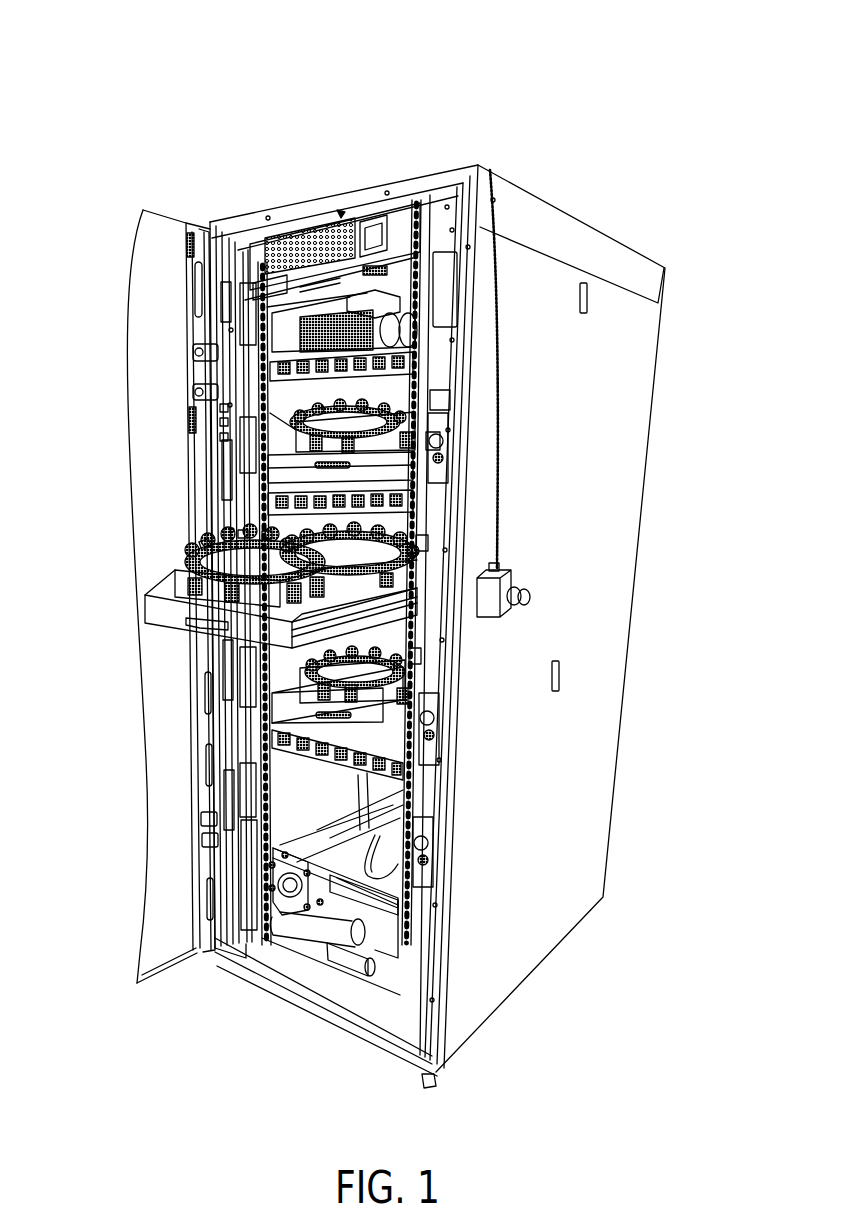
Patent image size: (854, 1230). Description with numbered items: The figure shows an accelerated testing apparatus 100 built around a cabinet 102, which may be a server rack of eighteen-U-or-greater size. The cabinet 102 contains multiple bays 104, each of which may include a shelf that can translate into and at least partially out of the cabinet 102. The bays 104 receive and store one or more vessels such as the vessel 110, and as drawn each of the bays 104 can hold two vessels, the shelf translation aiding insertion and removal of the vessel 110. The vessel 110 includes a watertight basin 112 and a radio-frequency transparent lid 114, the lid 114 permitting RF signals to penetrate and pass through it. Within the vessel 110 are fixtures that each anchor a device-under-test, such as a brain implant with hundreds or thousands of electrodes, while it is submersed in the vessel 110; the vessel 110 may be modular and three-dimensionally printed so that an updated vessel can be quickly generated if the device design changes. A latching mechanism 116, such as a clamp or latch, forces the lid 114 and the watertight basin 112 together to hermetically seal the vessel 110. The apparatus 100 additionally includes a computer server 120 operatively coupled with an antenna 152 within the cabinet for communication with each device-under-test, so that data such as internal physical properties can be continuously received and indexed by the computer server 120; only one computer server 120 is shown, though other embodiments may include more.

The accelerated testing apparatus 100 is at (211, 86).
The cabinet 102 is at (612, 327).
The bays 104 is at (407, 657).
The vessel 110 is at (244, 524).
The watertight basin 112 is at (170, 593).
The radio-frequency transparent lid 114 is at (180, 577).
The latching mechanism 116 is at (195, 543).
The computer server 120 is at (345, 233).
The antenna 152 is at (342, 272).